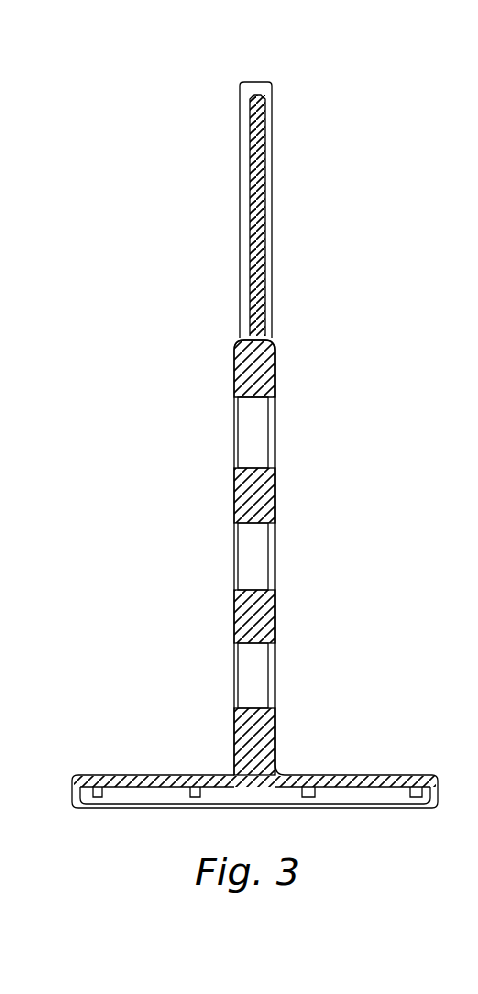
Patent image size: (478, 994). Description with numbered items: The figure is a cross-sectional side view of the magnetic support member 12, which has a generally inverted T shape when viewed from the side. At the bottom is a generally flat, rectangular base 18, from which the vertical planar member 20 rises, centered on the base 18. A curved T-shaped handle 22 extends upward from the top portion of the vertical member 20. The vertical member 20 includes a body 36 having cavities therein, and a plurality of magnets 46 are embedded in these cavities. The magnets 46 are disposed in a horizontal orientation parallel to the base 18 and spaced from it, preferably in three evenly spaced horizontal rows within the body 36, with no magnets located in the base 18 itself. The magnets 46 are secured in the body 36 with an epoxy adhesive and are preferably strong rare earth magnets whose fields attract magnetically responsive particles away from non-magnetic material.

The magnetic support member 12 is at (348, 279).
The handle 22 is at (268, 84).
The vertical planar member 20 is at (235, 358).
The body 36 is at (280, 360).
The magnets 46 is at (267, 432).
The base 18 is at (437, 775).